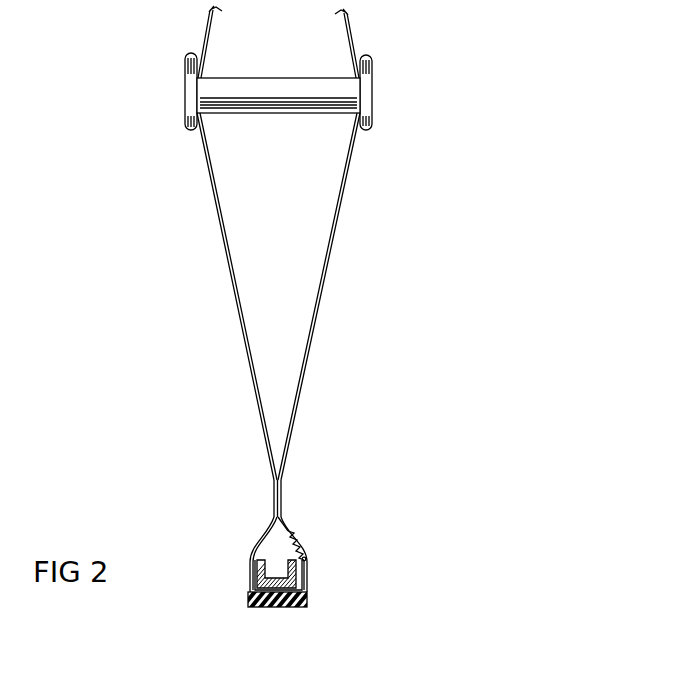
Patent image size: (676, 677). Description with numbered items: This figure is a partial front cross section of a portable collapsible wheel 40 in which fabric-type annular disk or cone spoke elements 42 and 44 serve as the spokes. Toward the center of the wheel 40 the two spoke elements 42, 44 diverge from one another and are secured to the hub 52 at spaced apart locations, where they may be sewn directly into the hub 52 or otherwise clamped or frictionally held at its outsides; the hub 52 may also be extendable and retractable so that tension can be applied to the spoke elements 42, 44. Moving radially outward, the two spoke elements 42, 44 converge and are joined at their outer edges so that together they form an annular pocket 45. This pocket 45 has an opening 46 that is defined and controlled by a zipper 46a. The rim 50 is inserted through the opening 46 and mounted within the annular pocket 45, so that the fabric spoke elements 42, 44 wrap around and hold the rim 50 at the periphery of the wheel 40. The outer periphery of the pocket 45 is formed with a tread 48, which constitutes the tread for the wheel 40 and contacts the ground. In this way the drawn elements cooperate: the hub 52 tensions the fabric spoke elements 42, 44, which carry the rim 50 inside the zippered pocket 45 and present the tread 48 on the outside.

The wheel 40 is at (533, 126).
The spoke element 42 is at (321, 302).
The spoke element 44 is at (234, 291).
The annular pocket 45 is at (251, 543).
The opening 46 is at (304, 540).
The zipper 46a is at (305, 558).
The tread 48 is at (250, 598).
The rim 50 is at (298, 580).
The hub 52 is at (372, 92).